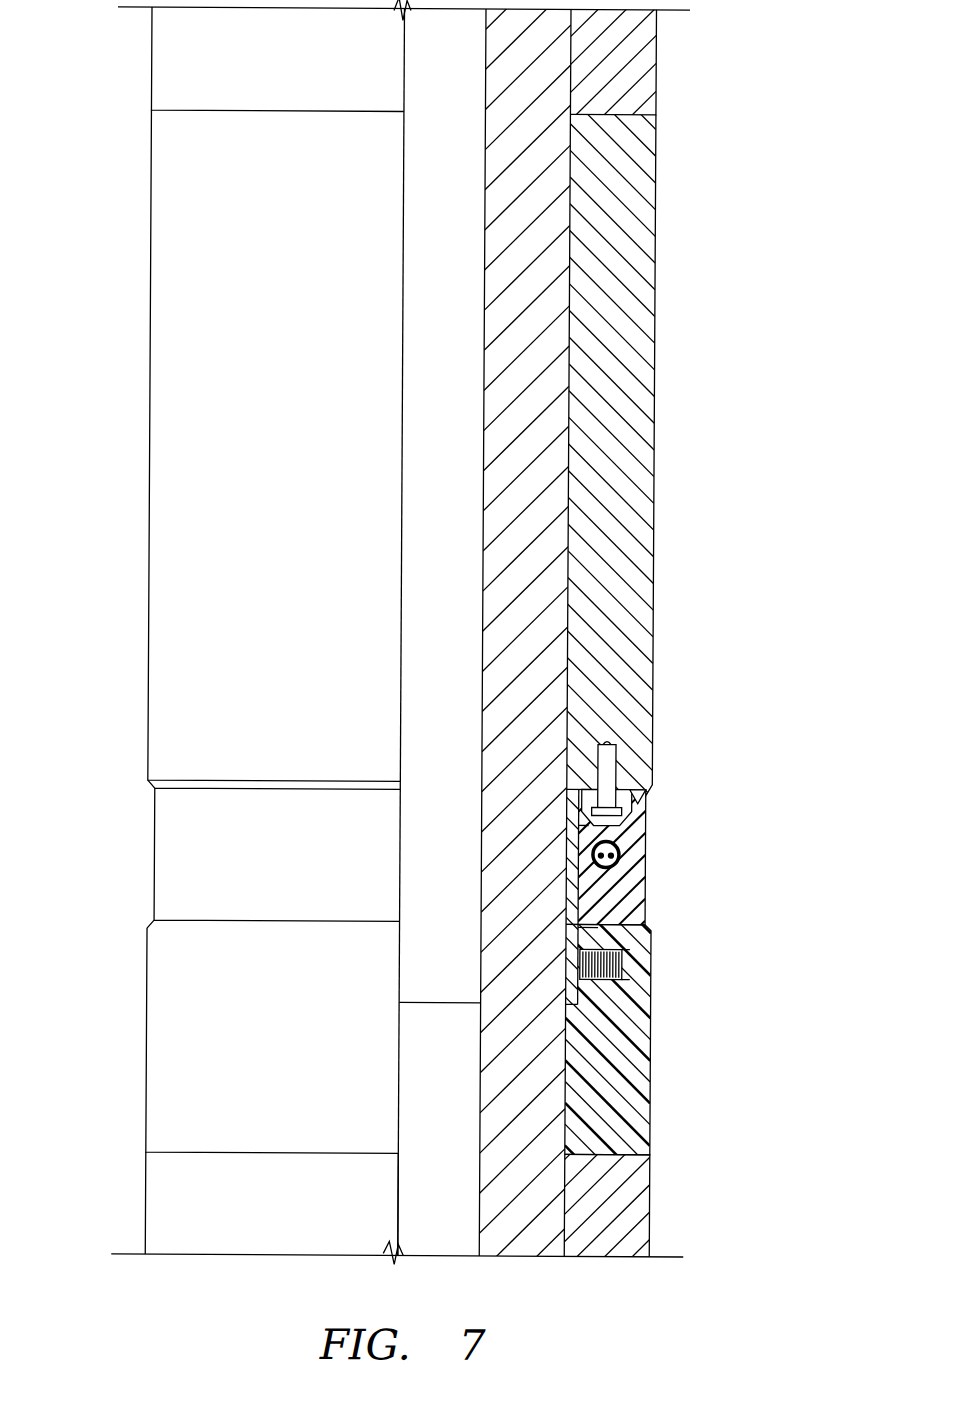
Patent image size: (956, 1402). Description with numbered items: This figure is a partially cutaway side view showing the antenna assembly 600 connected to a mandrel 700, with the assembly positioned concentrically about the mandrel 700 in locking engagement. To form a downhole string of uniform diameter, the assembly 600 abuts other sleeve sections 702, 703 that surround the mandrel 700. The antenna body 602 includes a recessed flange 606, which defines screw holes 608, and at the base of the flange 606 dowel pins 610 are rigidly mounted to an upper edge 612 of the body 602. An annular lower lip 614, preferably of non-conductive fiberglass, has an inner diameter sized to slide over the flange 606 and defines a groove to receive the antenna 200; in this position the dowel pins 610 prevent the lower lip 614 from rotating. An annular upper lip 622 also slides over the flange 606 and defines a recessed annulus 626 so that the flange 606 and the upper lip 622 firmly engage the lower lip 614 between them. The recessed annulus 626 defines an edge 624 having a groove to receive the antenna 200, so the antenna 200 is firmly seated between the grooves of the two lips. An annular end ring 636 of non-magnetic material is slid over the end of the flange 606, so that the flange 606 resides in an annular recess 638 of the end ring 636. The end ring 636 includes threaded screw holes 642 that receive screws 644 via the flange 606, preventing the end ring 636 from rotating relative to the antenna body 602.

The antenna assembly 600 is at (741, 131).
The mandrel 700 is at (491, 670).
The sleeve section 702 is at (152, 59).
The sleeve section 703 is at (152, 1195).
The antenna body 602 is at (152, 419).
The upper lip 622 is at (159, 854).
The end ring 636 is at (152, 1040).
The recessed flange 606 is at (576, 883).
The screw holes 608 is at (579, 941).
The dowel pins 610 is at (613, 778).
The upper edge 612 is at (636, 802).
The lower lip 614 is at (625, 855).
The antenna 200 is at (620, 868).
The edge 624 is at (582, 834).
The recessed annulus 626 is at (646, 832).
The annular recess 638 is at (584, 929).
The threaded screw holes 642 is at (629, 964).
The screws 644 is at (631, 950).